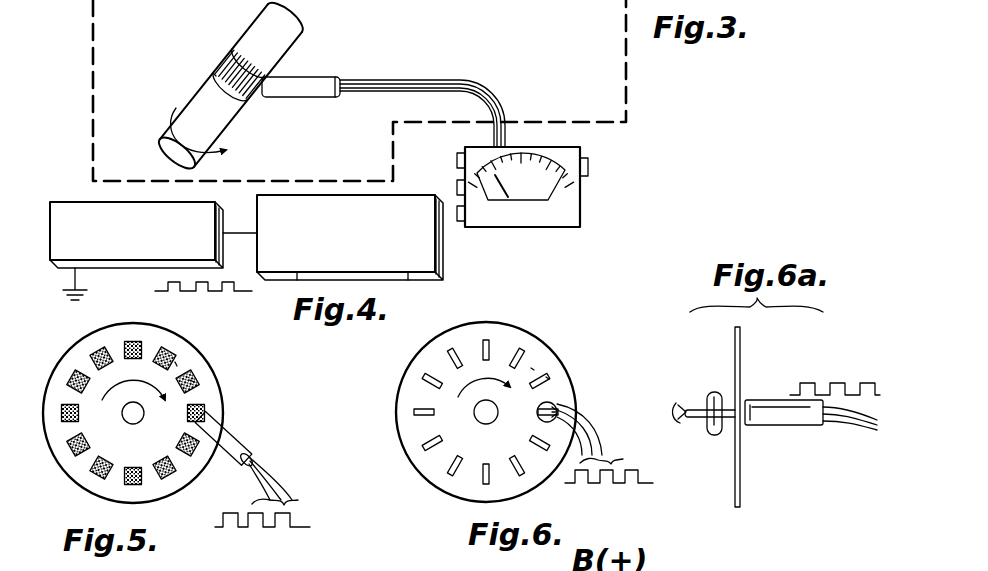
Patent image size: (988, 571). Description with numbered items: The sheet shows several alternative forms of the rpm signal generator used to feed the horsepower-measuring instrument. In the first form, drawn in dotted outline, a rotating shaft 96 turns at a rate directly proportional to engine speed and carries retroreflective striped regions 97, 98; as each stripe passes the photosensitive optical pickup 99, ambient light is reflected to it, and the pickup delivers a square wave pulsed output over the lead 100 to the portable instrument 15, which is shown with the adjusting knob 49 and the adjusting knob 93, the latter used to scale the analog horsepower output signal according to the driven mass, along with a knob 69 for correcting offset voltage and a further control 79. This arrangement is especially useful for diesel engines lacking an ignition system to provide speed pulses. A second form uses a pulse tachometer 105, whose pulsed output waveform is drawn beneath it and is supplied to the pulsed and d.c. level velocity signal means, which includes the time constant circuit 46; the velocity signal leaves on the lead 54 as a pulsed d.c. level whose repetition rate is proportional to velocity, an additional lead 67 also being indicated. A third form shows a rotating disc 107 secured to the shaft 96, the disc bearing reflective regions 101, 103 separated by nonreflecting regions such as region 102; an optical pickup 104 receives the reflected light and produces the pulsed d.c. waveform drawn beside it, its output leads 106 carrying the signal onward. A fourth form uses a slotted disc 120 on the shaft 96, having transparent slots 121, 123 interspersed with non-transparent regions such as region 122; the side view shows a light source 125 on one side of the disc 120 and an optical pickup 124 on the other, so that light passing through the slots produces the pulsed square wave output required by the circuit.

In FIG. 3, the rotating shaft 96 is at (298, 27).
In FIG. 5, the rotating shaft 96 is at (132, 416).
In FIG. 6, the rotating shaft 96 is at (486, 415).
In FIG. 6A, the rotating shaft 96 is at (700, 410).
In FIG. 3, the striped region 97 is at (226, 60).
In FIG. 3, the striped region 98 is at (216, 79).
In FIG. 3, the photosensitive optical pickup 99 is at (317, 78).
In FIG. 3, the lead 100 is at (420, 78).
In FIG. 3, the portable instrument 15 is at (581, 222).
In FIG. 3, the adjusting knob 49 is at (589, 165).
In FIG. 3, the adjusting knob 69 is at (458, 154).
In FIG. 3, the terminal 79 is at (458, 183).
In FIG. 3, the adjusting knob 93 is at (461, 222).
In FIG. 4, the pulse tachometer 105 is at (79, 202).
In FIG. 4, the time constant circuit 46 is at (355, 278).
In FIG. 4, the lead 54 is at (297, 281).
In FIG. 4, the output lead 67 is at (408, 280).
In FIG. 5, the rotating disc 107 is at (172, 333).
In FIG. 5, the reflective region 101 is at (165, 355).
In FIG. 5, the nonreflecting region 102 is at (175, 363).
In FIG. 5, the reflective region 103 is at (193, 380).
In FIG. 5, the optical pickup 104 is at (208, 424).
In FIG. 5, the pulse output leads 106 is at (283, 470).
In FIG. 6, the slotted disc 120 is at (503, 330).
In FIG. 6A, the slotted disc 120 is at (735, 345).
In FIG. 6, the transparent slot 121 is at (514, 343).
In FIG. 6, the non-transparent region 122 is at (532, 369).
In FIG. 6, the transparent slot 123 is at (548, 377).
In FIG. 6, the optical pickup 124 is at (554, 401).
In FIG. 6A, the optical pickup 124 is at (768, 402).
In FIG. 6A, the light source 125 is at (710, 432).